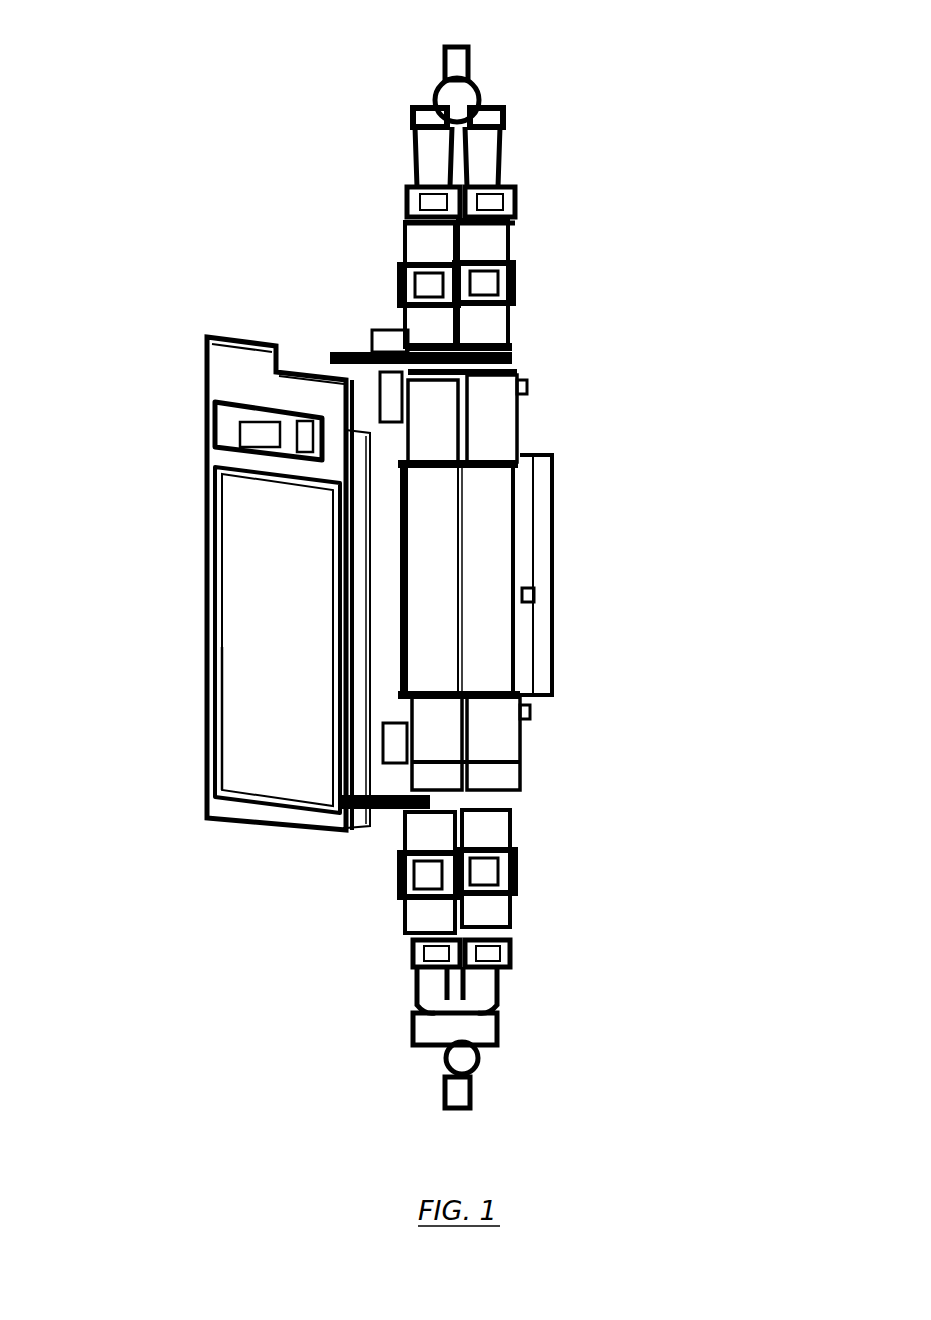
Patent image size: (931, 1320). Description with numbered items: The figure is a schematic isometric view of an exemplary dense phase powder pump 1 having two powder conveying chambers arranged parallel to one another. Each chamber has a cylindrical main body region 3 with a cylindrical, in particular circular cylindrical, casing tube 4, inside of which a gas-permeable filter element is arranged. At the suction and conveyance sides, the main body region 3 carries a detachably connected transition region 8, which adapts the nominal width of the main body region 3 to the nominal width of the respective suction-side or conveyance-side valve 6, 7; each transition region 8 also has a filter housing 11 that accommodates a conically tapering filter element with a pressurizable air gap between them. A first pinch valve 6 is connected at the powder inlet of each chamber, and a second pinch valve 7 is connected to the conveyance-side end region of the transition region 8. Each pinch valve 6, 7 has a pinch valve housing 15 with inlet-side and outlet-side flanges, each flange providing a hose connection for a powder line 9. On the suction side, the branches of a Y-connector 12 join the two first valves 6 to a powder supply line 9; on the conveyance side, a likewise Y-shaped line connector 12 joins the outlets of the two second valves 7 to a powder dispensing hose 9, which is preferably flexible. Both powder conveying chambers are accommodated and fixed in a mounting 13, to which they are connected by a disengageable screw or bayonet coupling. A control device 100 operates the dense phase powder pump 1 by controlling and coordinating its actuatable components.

The dense phase powder pump 1 is at (178, 113).
The control device 100 is at (277, 427).
The main body region 3 is at (580, 576).
The casing tube 4 is at (490, 518).
The first pinch valve 6 is at (423, 902).
The second pinch valve 7 is at (457, 269).
The transition region 8 is at (593, 552).
The powder line 9 is at (458, 68).
The filter housing 11 is at (440, 412).
The Y-connector 12 is at (468, 96).
The mounting 13 is at (545, 617).
The pinch valve housing 15 is at (418, 248).